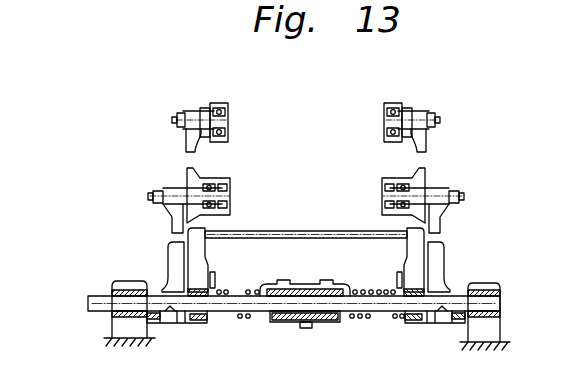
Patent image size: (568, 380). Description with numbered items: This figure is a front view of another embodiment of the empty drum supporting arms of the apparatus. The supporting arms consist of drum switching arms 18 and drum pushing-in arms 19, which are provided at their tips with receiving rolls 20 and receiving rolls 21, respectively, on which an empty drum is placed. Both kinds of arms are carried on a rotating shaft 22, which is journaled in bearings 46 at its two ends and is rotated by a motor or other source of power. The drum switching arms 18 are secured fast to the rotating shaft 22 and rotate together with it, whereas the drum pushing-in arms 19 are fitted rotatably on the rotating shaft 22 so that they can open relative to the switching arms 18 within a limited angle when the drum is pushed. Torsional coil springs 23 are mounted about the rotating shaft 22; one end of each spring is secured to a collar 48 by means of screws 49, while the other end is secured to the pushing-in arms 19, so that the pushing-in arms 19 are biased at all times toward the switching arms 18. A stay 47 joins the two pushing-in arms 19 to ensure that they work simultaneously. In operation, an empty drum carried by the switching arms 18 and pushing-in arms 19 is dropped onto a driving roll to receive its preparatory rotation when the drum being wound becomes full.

The drum switching arms 18 is at (168, 254).
The drum pushing-in arms 19 is at (185, 143).
The receiving rolls 20 is at (215, 178).
The receiving rolls 21 is at (218, 103).
The rotating shaft 22 is at (460, 316).
The torsional coil springs 23 is at (363, 290).
The bearings 46 is at (117, 328).
The stay 47 is at (287, 231).
The collar 48 is at (330, 323).
The screws 49 is at (328, 281).